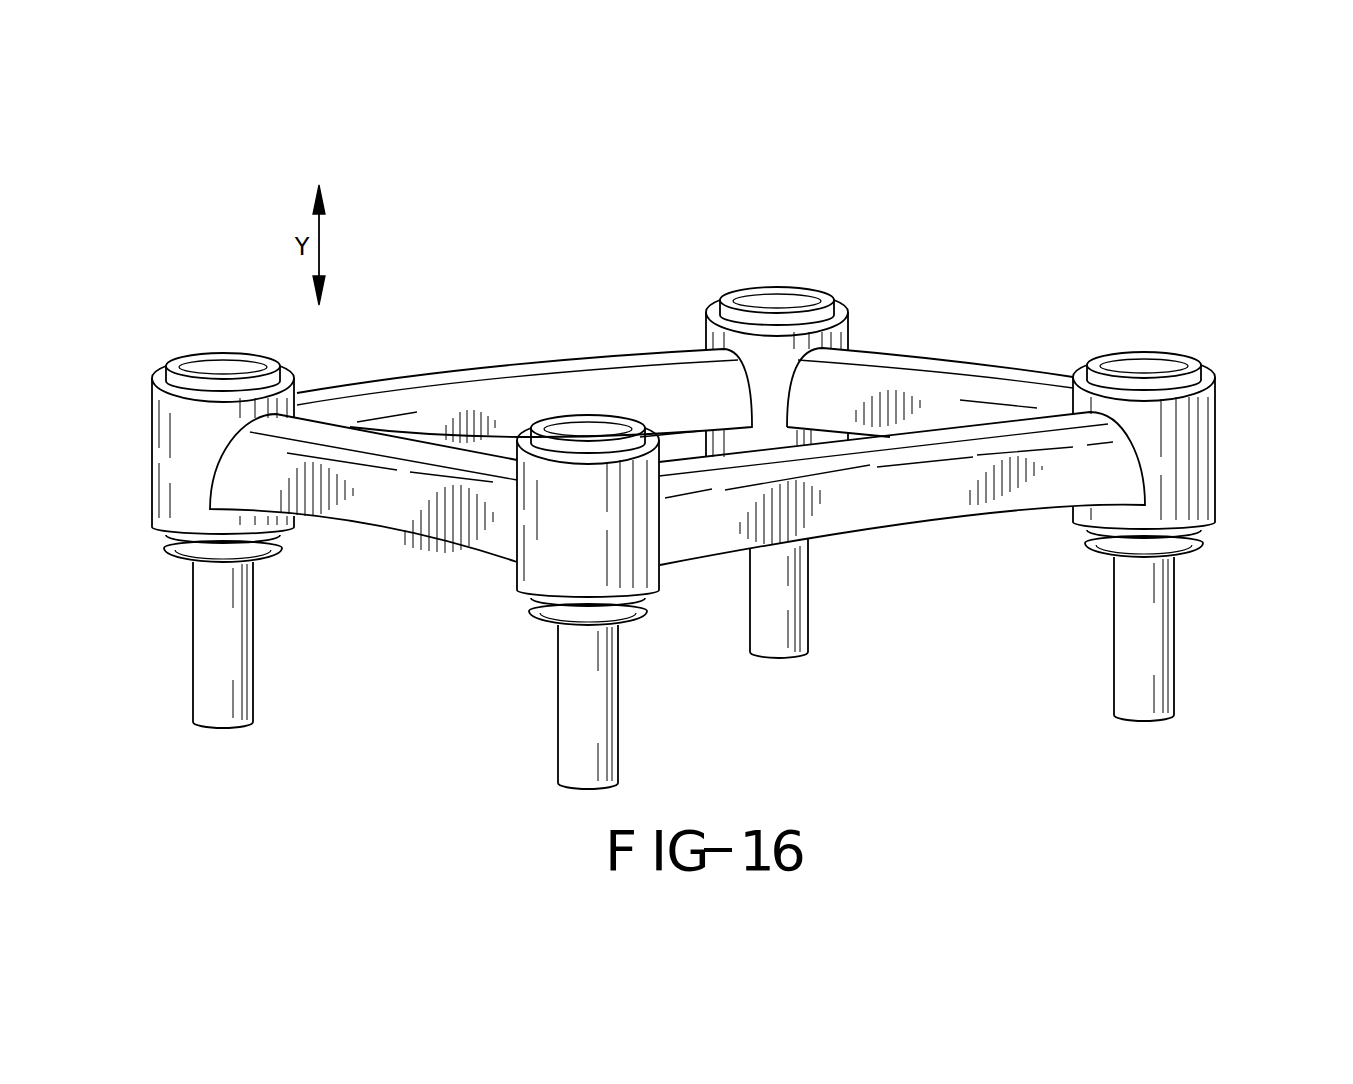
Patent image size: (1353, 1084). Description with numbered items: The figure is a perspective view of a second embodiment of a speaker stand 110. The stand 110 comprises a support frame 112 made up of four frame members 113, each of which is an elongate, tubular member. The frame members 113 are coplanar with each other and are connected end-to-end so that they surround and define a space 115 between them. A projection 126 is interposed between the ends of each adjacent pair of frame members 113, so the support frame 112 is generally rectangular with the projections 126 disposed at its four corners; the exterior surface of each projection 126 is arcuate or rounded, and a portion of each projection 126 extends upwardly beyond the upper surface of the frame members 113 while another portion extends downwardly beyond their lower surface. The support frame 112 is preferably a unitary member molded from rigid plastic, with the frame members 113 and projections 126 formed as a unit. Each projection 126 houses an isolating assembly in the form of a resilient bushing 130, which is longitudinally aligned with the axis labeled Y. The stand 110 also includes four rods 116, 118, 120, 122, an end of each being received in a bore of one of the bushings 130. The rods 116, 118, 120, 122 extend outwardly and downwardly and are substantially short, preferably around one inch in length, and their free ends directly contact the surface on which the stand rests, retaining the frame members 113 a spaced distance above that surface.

The speaker stand 110 is at (684, 484).
The support frame 112 is at (677, 436).
The frame member 113 is at (498, 383).
The space 115 is at (645, 402).
The rod 116 is at (575, 715).
The rod 118 is at (208, 658).
The rod 120 is at (773, 642).
The rod 122 is at (1130, 637).
The projection 126 is at (178, 460).
The resilient bushing 130 is at (806, 272).